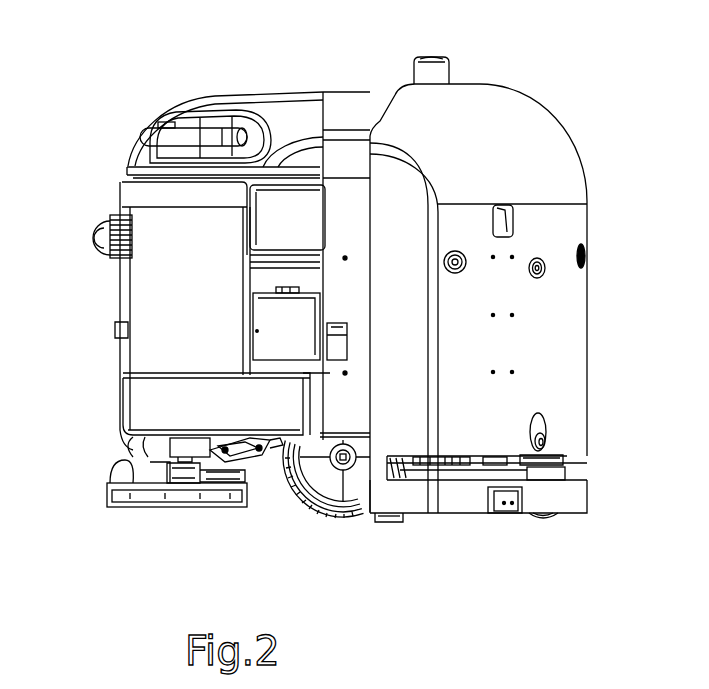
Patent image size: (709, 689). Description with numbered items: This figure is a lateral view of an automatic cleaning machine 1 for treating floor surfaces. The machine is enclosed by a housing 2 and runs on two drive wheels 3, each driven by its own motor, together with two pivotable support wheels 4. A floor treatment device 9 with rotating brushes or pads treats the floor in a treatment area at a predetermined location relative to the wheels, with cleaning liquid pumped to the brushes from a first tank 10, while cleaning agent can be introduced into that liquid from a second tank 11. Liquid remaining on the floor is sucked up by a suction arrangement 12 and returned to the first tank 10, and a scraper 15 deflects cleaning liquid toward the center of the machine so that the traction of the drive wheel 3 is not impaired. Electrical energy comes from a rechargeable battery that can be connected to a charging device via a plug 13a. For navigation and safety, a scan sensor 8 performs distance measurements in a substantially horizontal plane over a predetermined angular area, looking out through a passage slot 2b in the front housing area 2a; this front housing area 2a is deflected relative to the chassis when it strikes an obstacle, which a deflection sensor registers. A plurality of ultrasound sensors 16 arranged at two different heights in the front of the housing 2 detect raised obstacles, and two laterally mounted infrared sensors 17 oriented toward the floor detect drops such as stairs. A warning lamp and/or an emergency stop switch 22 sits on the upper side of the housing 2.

The cleaning machine 1 is at (192, 37).
The housing 2 is at (548, 100).
The housing area 2a is at (599, 396).
The passage slot 2b is at (570, 464).
The drive wheel 3 is at (297, 505).
The support wheel 4 is at (547, 520).
The scan sensor 8 is at (567, 462).
The floor treatment device 9 is at (442, 522).
The first tank 10 is at (140, 300).
The second tank 11 is at (257, 333).
The suction arrangement 12 is at (137, 510).
The plug 13a is at (363, 345).
The scraper 15 is at (387, 522).
The ultrasound sensor 16 is at (478, 270).
The infrared sensor 17 is at (503, 503).
The emergency stop switch 22 is at (466, 68).